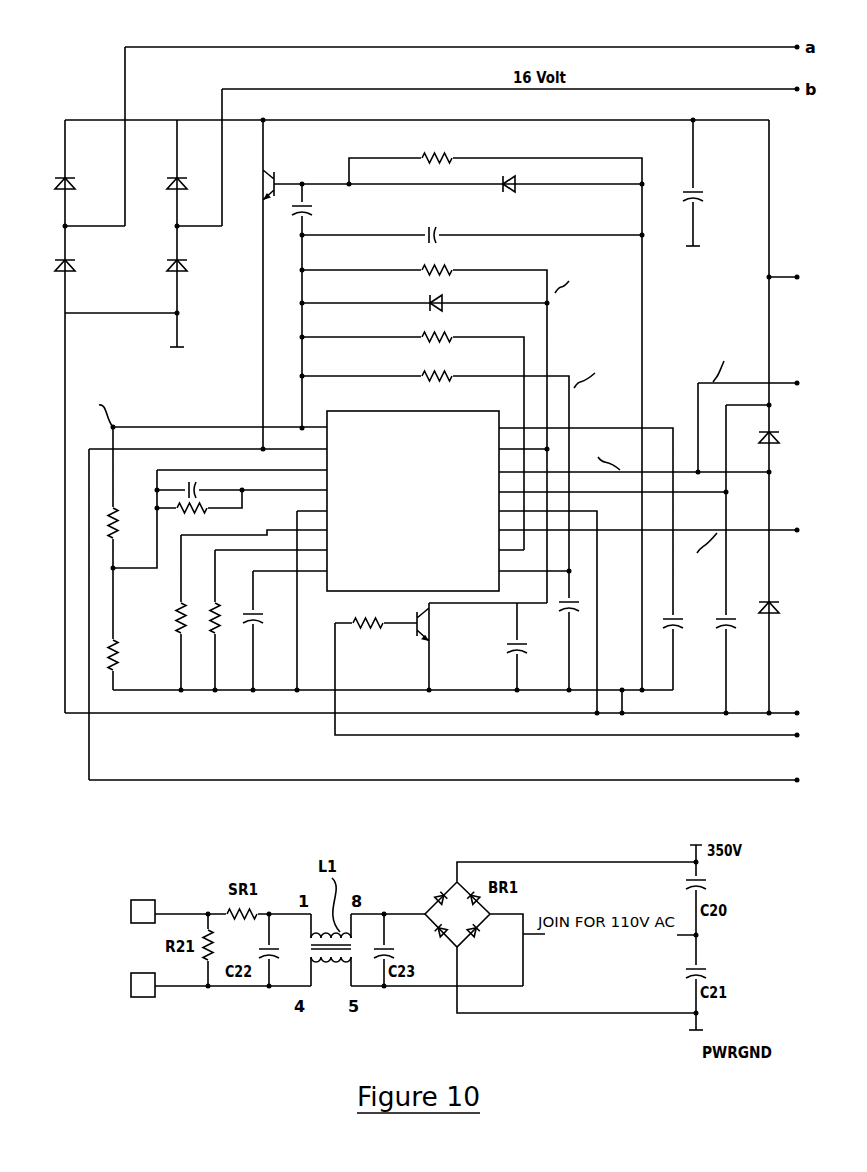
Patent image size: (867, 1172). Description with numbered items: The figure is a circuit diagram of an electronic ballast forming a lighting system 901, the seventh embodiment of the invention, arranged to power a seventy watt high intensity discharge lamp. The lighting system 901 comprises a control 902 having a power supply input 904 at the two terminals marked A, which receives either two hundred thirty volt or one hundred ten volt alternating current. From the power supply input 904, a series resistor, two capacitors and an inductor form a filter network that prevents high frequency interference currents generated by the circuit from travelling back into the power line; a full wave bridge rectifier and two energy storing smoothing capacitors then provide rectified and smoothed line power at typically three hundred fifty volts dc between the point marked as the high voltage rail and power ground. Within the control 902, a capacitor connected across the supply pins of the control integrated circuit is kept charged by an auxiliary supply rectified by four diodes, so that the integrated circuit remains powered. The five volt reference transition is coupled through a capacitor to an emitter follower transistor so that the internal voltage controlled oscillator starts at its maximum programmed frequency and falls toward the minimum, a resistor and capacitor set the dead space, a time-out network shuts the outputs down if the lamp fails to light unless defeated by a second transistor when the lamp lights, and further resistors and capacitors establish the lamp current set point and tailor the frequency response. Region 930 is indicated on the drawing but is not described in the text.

The lighting system 901 is at (171, 27).
The transistor Q2 regulator 930 is at (311, 26).
The control 902 is at (563, 33).
The power supply input 904 is at (102, 918).